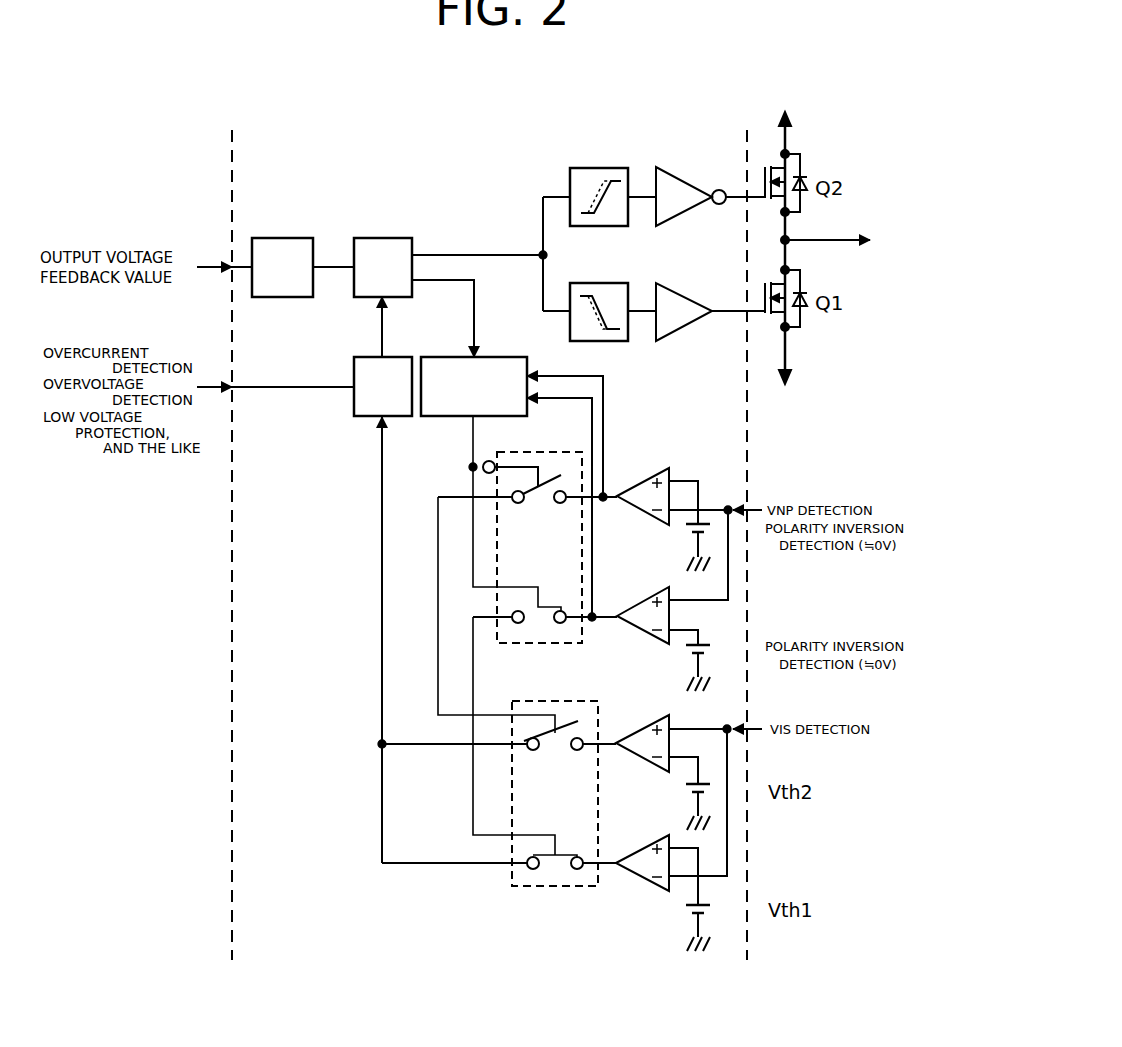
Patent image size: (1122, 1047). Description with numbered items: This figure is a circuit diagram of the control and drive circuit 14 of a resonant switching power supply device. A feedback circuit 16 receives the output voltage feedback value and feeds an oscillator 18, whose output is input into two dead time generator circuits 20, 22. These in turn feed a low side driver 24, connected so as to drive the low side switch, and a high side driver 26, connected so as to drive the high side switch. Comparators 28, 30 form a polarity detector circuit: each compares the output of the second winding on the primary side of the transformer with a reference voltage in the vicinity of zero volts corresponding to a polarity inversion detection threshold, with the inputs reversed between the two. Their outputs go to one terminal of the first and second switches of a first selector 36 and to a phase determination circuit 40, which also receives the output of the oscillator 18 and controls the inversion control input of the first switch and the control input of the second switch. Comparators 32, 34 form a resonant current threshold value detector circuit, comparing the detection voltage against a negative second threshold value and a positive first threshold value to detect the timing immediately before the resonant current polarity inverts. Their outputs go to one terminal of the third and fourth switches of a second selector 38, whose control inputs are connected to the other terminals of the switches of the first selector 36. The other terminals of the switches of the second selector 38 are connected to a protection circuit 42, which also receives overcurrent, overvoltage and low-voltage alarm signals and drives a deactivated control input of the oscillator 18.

The control and drive circuit 14 is at (417, 149).
The feedback circuit 16 is at (284, 238).
The oscillator 18 is at (383, 238).
The dead time generator circuit 20 is at (598, 283).
The dead time generator circuit 22 is at (598, 168).
The low side driver 24 is at (684, 289).
The high side driver 26 is at (683, 172).
The comparator 28 is at (643, 470).
The comparator 30 is at (643, 590).
The comparator 32 is at (643, 717).
The comparator 34 is at (643, 837).
The first selector 36 is at (538, 452).
The second selector 38 is at (545, 701).
The phase determination circuit 40 is at (499, 357).
The protection circuit 42 is at (354, 362).